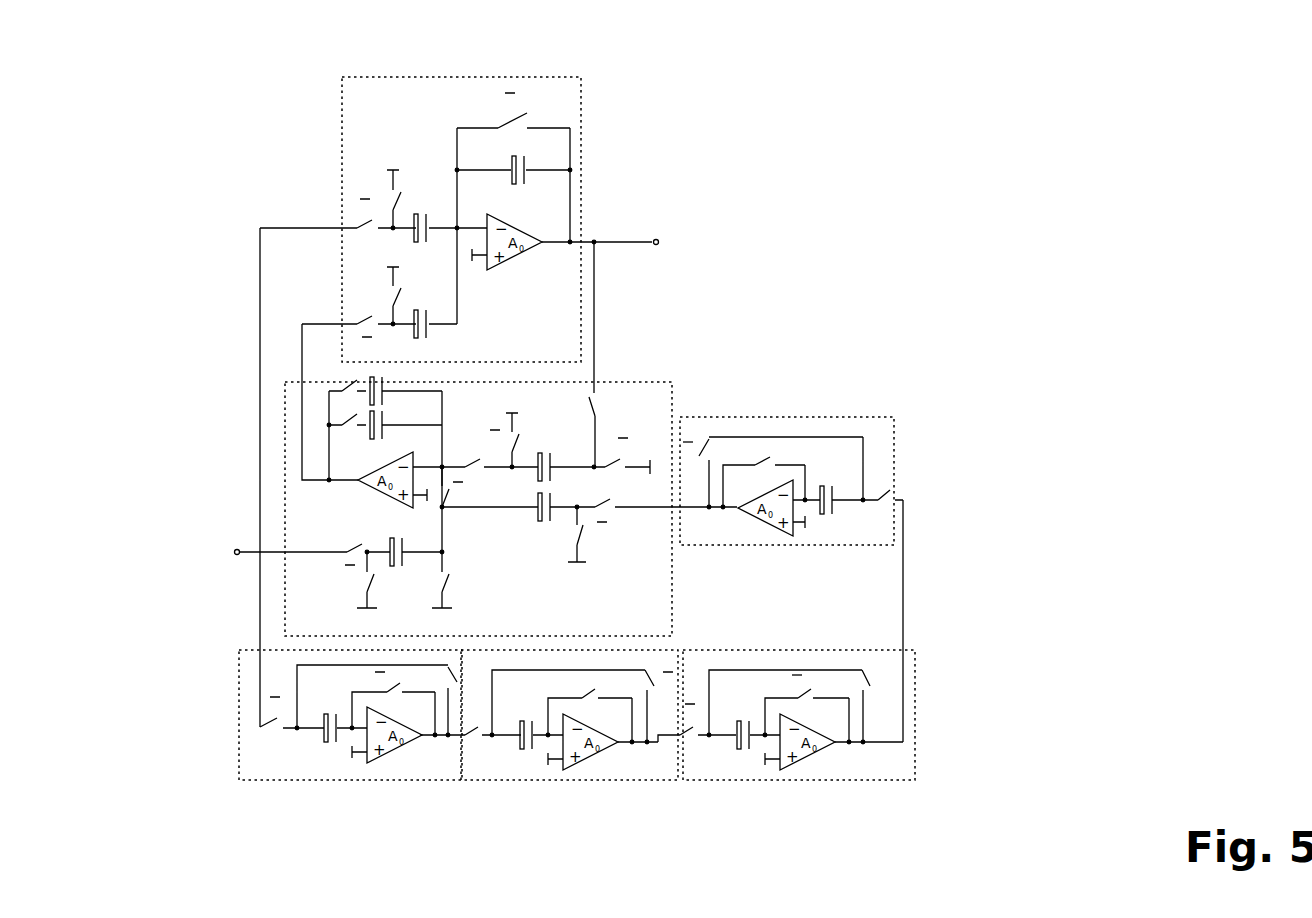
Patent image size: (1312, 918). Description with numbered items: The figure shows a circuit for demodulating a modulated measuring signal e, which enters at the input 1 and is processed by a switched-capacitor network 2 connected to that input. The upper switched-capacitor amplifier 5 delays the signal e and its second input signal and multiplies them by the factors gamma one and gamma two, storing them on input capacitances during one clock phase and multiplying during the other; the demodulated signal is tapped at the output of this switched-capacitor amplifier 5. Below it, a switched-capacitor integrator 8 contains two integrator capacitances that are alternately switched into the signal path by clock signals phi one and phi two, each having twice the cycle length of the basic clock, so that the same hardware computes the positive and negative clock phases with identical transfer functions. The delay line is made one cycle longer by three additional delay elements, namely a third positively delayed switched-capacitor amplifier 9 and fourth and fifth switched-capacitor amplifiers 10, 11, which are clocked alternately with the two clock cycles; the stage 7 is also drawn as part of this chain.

The input 1 is at (252, 557).
The switched-capacitor network 2 is at (793, 352).
The switched-capacitor amplifier 5 is at (582, 177).
The third stage 7 is at (280, 780).
The switched-capacitor integrator 8 is at (280, 528).
The third positively delayed switched-capacitor amplifier 9 is at (540, 780).
The fourth switched-capacitor amplifier 10 is at (770, 780).
The fifth switched-capacitor amplifier 11 is at (894, 457).